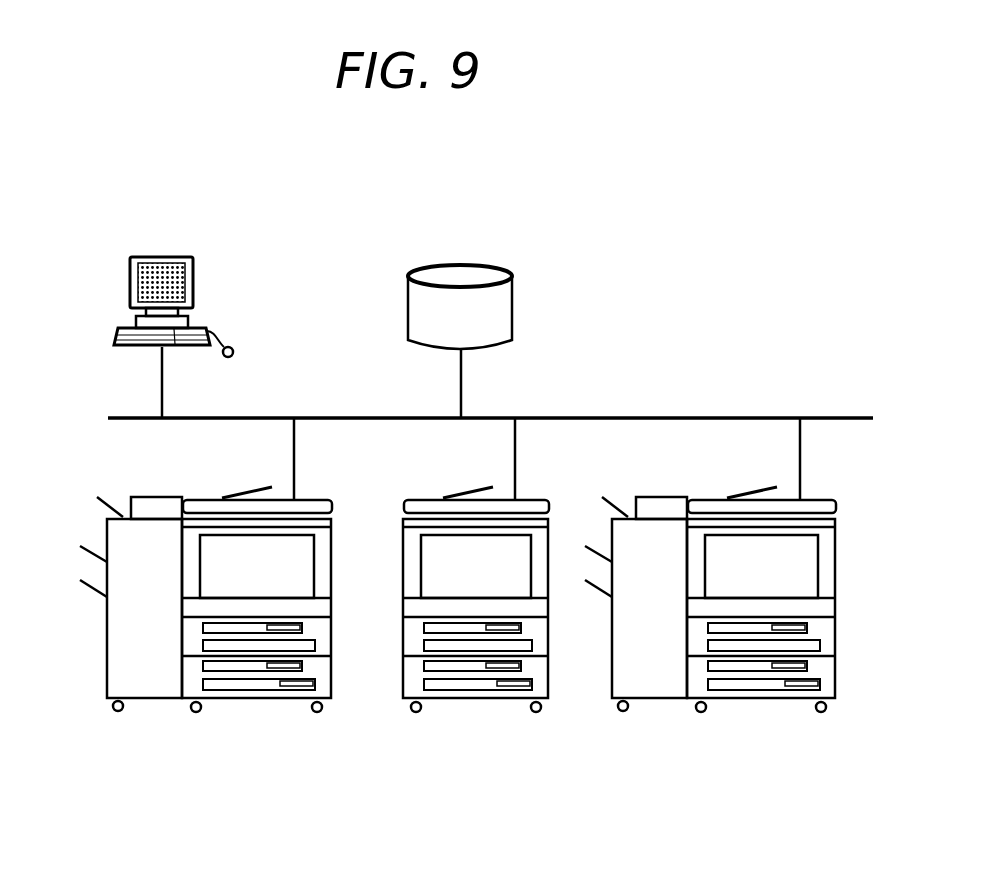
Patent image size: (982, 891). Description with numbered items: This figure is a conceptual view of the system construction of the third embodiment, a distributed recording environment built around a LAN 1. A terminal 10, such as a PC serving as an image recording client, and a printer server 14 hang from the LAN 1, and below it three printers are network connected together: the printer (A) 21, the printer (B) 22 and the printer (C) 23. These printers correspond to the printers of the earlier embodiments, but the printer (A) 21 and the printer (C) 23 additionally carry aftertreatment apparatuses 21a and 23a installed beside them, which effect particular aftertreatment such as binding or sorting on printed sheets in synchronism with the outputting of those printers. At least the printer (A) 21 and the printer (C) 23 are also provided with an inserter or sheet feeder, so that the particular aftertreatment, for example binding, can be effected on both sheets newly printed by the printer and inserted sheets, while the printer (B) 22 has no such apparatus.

The LAN 1 is at (853, 418).
The terminal 10 is at (130, 278).
The printer server 14 is at (408, 285).
The printer (A) 21 is at (250, 704).
The aftertreatment apparatus 21a is at (121, 669).
The printer (B) 22 is at (468, 700).
The printer (C) 23 is at (753, 700).
The aftertreatment apparatus 23a is at (626, 669).